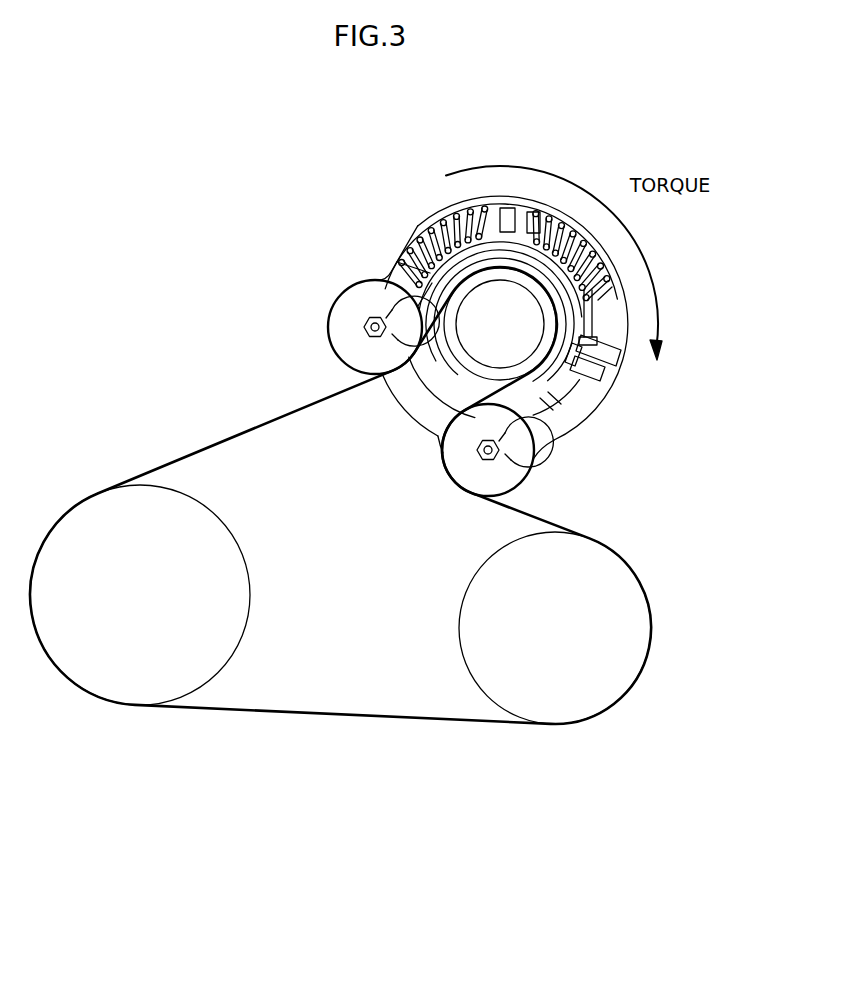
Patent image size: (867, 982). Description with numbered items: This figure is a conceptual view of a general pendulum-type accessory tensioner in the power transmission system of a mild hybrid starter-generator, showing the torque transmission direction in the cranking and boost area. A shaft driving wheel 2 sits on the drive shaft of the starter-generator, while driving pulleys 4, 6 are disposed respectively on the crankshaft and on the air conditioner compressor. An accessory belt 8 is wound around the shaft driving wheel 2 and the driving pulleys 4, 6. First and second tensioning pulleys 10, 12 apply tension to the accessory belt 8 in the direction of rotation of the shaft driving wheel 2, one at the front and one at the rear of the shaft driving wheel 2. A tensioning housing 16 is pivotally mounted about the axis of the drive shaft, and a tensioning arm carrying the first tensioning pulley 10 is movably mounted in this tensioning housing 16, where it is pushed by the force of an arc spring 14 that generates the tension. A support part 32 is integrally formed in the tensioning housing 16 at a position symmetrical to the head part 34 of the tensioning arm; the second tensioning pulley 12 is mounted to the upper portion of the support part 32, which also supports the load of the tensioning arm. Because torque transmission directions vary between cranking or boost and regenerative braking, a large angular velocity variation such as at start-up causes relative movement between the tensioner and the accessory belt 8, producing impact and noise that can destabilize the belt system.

The shaft driving wheel 2 is at (513, 333).
The driving pulley 4 is at (143, 660).
The driving pulley 6 is at (573, 692).
The accessory belt 8 is at (253, 415).
The first tensioning pulley 10 is at (518, 485).
The second tensioning pulley 12 is at (355, 280).
The arc spring 14 is at (420, 230).
The tensioning housing 16 is at (577, 420).
The support part 32 is at (365, 322).
The head part 34 is at (488, 450).